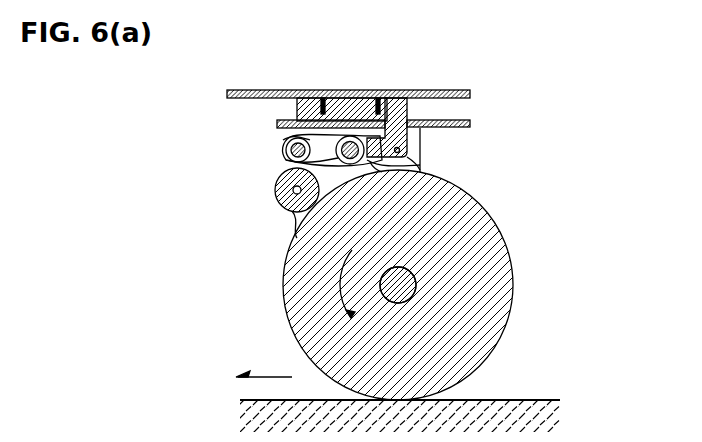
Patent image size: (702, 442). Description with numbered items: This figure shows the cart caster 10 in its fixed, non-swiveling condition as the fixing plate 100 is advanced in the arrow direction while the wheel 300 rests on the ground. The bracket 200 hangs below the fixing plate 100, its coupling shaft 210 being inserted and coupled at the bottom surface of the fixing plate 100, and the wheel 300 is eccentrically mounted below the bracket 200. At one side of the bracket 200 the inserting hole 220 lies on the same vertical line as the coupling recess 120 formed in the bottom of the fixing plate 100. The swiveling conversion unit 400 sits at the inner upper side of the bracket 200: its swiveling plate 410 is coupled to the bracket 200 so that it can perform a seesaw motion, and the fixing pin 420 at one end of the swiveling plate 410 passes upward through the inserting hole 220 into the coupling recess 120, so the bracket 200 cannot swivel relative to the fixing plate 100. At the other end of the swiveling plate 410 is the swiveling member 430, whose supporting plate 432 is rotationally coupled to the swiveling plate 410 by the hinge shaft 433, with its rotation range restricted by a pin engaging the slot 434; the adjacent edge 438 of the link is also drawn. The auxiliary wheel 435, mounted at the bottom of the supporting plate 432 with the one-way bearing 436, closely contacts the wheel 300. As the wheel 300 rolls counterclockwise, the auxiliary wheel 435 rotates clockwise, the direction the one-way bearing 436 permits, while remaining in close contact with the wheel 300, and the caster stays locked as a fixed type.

The cleaning robot / moving apparatus 10 is at (214, 58).
The fixing plate 100 is at (275, 90).
The coupling shaft 210 is at (350, 98).
The coupling recess 120 is at (380, 98).
The bracket 200 is at (430, 128).
The inserting hole 220 is at (410, 114).
The fixing pin 420 is at (410, 145).
The swiveling conversion unit 400 is at (413, 150).
The swiveling plate 410 is at (418, 167).
The swiveling member 430 is at (148, 113).
The link upper edge 438 is at (281, 143).
The hinge shaft 433 is at (280, 141).
The slot 434 is at (286, 150).
The supporting plate 432 is at (282, 160).
The auxiliary wheel 435 is at (274, 189).
The one-way bearing 436 is at (283, 202).
The wheel 300 is at (512, 268).